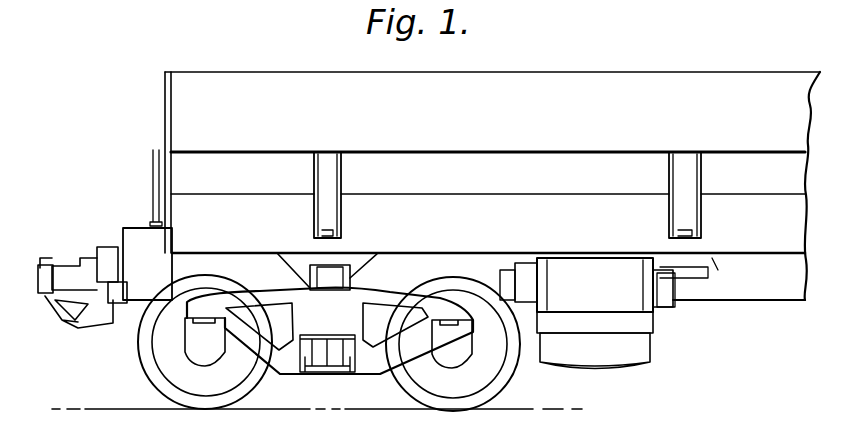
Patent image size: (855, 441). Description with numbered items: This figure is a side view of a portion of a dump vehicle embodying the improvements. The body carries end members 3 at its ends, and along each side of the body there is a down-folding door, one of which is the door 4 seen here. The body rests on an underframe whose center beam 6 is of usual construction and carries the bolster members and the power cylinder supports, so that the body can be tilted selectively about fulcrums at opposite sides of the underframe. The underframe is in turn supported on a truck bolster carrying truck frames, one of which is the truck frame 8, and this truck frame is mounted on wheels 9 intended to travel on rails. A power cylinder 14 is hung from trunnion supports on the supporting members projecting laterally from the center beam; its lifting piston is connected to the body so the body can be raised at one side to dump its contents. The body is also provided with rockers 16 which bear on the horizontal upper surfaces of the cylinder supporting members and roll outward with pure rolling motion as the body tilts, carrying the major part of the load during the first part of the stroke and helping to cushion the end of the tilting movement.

The end member 3 is at (172, 102).
The down-folding door 4 is at (492, 186).
The rocker 16 is at (335, 175).
The center beam 6 is at (731, 282).
The truck frame 8 is at (330, 313).
The wheel 9 is at (175, 360).
The power cylinder 14 is at (586, 313).